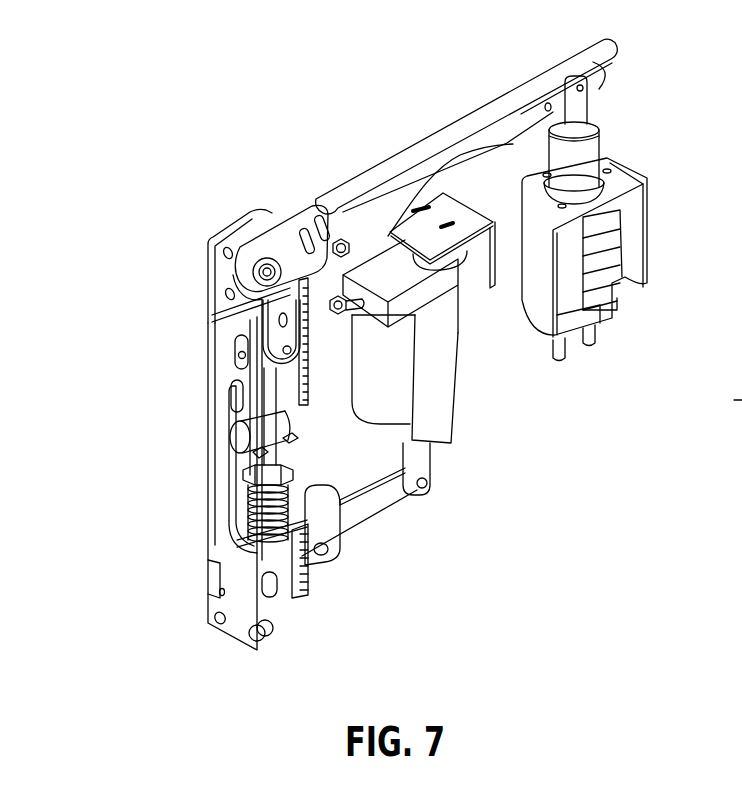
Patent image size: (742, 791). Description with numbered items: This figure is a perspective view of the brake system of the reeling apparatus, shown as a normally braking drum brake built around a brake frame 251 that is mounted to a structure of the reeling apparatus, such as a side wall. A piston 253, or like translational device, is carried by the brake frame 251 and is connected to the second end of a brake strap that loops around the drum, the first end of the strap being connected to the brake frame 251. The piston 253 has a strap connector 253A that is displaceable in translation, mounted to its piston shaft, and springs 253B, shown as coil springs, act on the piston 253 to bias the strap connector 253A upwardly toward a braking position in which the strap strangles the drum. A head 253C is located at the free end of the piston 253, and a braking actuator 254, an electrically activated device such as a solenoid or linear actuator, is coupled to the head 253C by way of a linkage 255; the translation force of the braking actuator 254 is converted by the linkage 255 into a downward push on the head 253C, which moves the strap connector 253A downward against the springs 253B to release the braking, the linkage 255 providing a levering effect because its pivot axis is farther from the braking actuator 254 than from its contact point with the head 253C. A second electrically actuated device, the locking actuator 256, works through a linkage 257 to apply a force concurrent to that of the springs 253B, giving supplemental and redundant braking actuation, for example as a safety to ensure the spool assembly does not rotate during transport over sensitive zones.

The brake frame 251 is at (207, 500).
The piston 253 is at (295, 488).
The strap connector 253A is at (233, 440).
The springs 253B is at (273, 523).
The head 253C is at (253, 317).
The braking actuator 254 is at (652, 252).
The linkage 255 is at (427, 139).
The locking actuator 256 is at (436, 386).
The linkage 257 is at (403, 505).